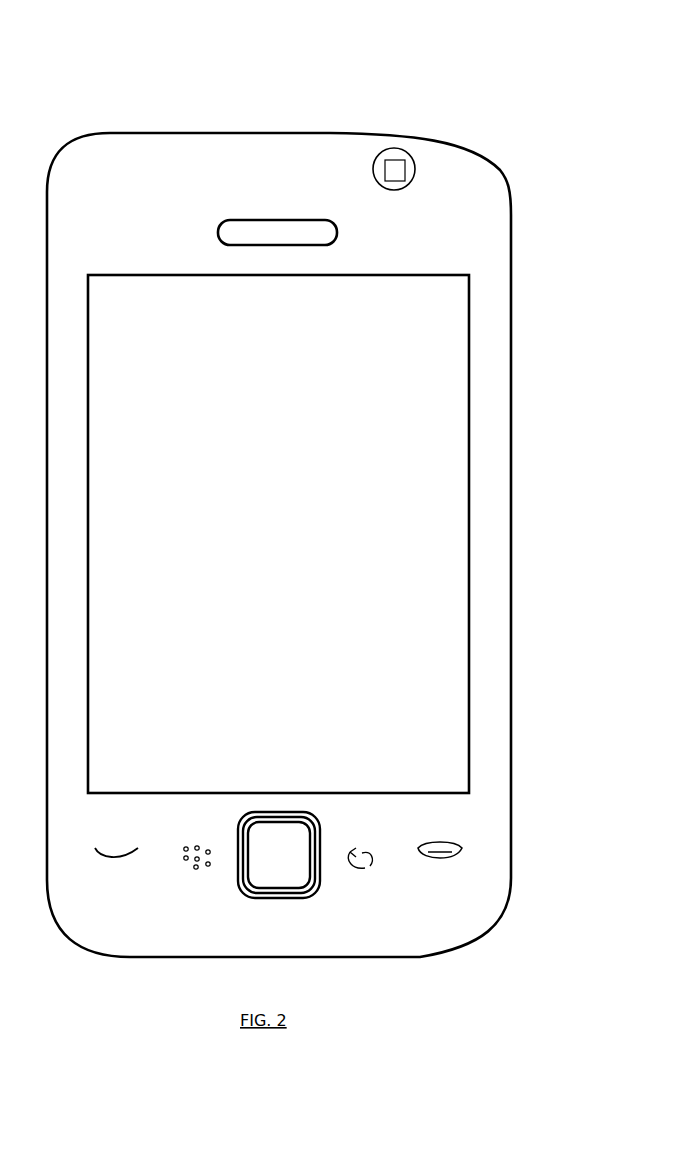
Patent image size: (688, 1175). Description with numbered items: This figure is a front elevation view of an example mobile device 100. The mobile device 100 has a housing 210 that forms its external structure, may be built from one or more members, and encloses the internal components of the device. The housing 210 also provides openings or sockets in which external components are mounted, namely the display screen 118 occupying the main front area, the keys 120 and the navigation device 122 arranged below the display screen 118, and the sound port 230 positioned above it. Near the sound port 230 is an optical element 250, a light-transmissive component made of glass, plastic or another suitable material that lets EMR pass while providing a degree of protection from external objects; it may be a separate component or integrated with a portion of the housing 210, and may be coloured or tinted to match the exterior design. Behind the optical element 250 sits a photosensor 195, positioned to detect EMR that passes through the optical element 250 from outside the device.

The mobile device 100 is at (438, 43).
The display screen 118 is at (385, 507).
The keys 120 is at (453, 867).
The navigation device 122 is at (296, 868).
The photosensor 195 is at (405, 180).
The housing 210 is at (498, 591).
The sound port 230 is at (298, 245).
The optical element 250 is at (400, 190).